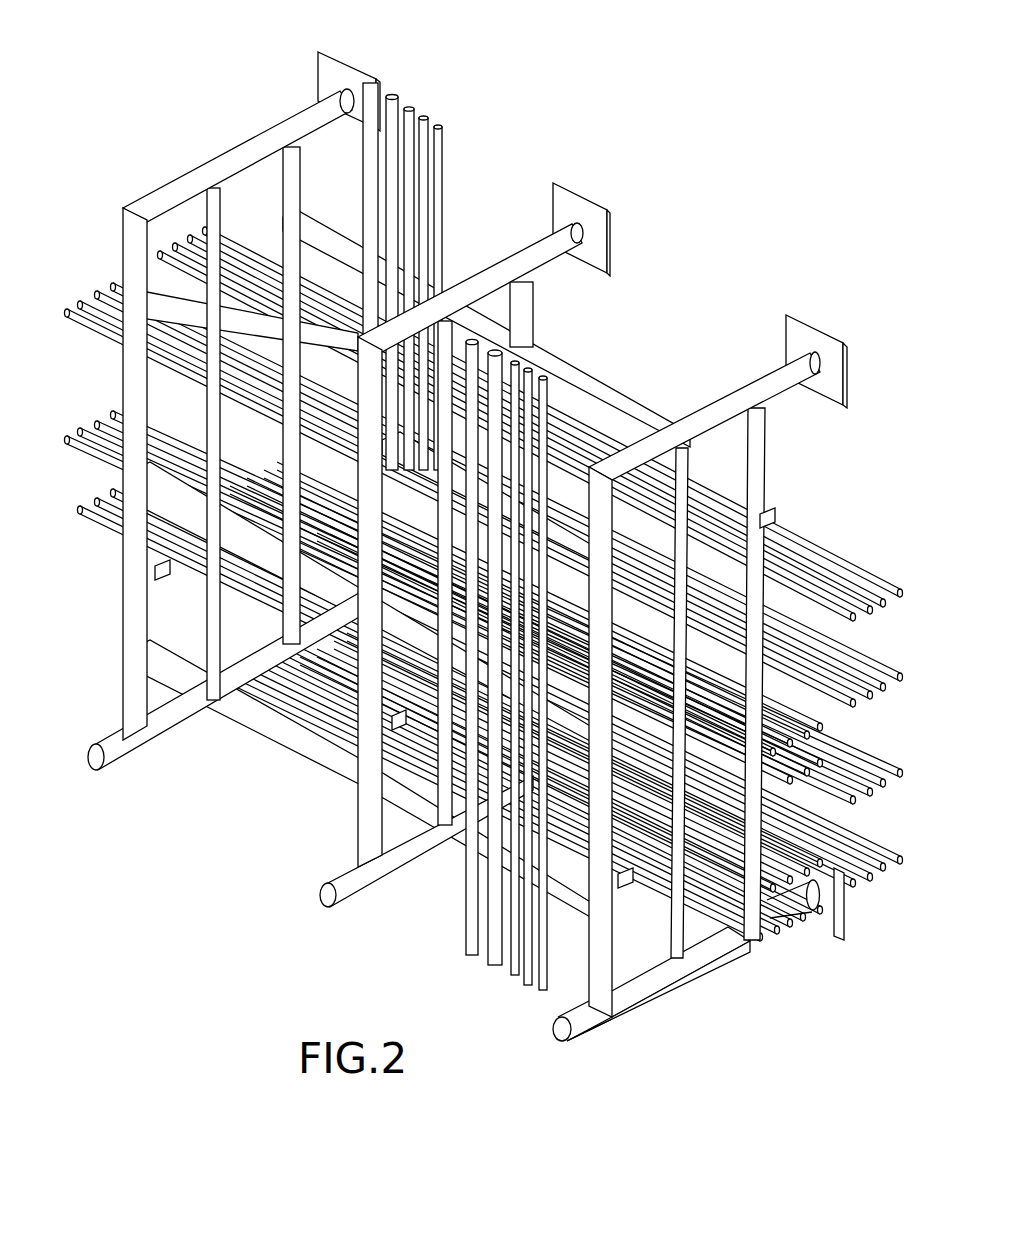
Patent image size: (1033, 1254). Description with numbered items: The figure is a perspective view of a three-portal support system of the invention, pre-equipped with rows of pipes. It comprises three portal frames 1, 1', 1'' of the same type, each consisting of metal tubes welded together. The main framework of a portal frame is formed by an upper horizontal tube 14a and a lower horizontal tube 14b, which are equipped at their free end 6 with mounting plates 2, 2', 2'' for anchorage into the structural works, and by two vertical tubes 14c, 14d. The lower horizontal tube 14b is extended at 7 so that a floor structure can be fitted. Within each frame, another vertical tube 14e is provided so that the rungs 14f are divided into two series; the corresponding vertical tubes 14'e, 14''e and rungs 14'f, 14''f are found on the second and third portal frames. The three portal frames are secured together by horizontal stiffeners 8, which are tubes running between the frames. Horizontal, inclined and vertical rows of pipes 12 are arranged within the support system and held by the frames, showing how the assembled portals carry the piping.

The portal frame 1 is at (722, 678).
The portal frame 1' is at (469, 530).
The portal frame 1'' is at (235, 393).
The mounting plate 2 is at (829, 627).
The mounting plate 2' is at (585, 215).
The mounting plate 2'' is at (350, 73).
The free end 6 is at (815, 348).
The extension of lower horizontal tube 7 is at (582, 1030).
The horizontal stiffener 8 is at (590, 374).
The rows of pipes 12 is at (844, 578).
The upper horizontal tube 14a is at (704, 408).
The lower horizontal tube 14b is at (668, 980).
The vertical tube 14c is at (610, 975).
The vertical tube 14d is at (768, 442).
The vertical tube 14e is at (686, 920).
The rungs 14f is at (768, 520).
The vertical tube 14'e is at (477, 573).
The rungs 14'f is at (407, 745).
The vertical tube 14''e is at (271, 445).
The rungs 14''f is at (178, 597).